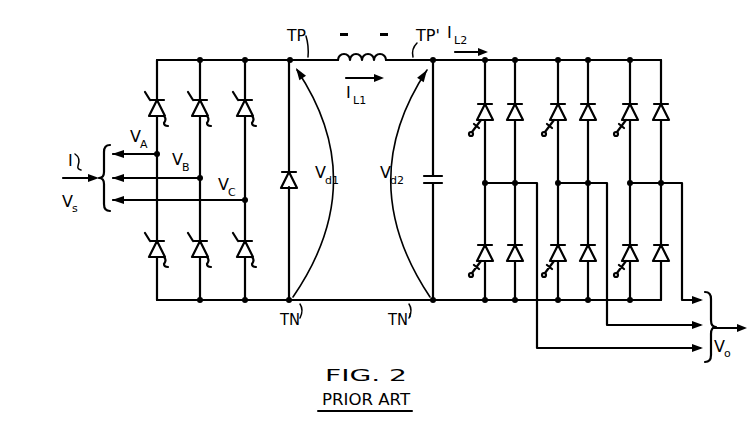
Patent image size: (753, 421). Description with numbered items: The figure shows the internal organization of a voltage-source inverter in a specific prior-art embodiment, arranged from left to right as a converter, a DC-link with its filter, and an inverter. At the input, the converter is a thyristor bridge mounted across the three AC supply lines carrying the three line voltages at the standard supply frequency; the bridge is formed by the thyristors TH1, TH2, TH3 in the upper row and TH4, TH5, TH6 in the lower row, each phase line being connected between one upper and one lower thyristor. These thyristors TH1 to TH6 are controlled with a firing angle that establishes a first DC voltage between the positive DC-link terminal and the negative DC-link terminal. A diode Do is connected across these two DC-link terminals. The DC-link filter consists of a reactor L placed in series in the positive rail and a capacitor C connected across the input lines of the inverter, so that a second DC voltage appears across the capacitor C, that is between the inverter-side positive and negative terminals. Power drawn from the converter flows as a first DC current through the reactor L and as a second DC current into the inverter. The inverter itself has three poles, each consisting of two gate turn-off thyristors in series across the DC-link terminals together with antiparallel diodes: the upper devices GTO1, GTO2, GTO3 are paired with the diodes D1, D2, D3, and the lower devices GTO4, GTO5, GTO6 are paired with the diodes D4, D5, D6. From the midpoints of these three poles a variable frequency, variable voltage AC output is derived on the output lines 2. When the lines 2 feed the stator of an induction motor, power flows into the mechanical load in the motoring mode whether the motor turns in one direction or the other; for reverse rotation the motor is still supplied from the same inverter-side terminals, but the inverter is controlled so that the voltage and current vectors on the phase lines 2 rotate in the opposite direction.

The output lines 2 is at (725, 325).
The thyristor TH1 is at (169, 115).
The thyristor TH2 is at (212, 115).
The thyristor TH3 is at (257, 115).
The thyristor TH4 is at (172, 260).
The thyristor TH5 is at (213, 260).
The thyristor TH6 is at (256, 260).
The diode Do is at (292, 188).
The reactor L is at (388, 57).
The capacitor C is at (443, 187).
The GTO GTO1 is at (478, 107).
The GTO GTO2 is at (550, 121).
The GTO GTO3 is at (623, 109).
The GTO GTO4 is at (478, 250).
The GTO GTO5 is at (543, 246).
The GTO GTO6 is at (625, 246).
The diode D1 is at (521, 103).
The diode D2 is at (590, 123).
The diode D3 is at (667, 107).
The diode D4 is at (508, 261).
The diode D5 is at (583, 243).
The diode D6 is at (658, 264).